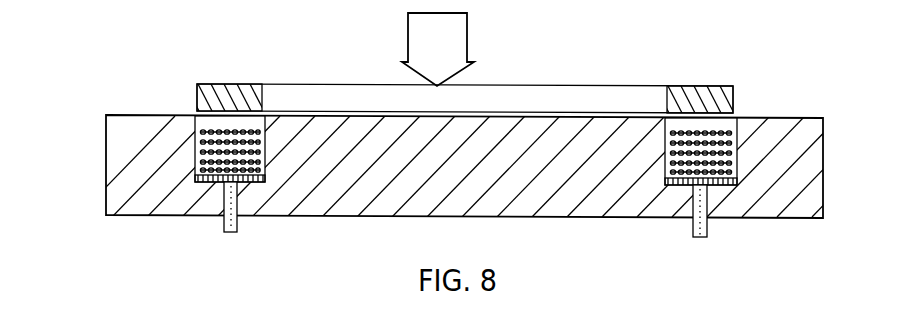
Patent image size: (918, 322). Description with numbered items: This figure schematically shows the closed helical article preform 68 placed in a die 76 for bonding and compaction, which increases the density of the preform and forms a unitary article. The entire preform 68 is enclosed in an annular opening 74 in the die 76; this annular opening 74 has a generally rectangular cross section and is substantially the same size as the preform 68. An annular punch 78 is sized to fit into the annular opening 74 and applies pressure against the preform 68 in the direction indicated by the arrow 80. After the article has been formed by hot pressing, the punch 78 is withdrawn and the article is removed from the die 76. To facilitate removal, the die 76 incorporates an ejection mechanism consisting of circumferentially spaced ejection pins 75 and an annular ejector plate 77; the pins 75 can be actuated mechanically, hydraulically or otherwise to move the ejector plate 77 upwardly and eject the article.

The article preform 68 is at (744, 113).
The annular opening 74 is at (199, 132).
The ejection pins 75 is at (208, 183).
The die 76 is at (92, 167).
The annular ejector plate 77 is at (231, 233).
The annular punch 78 is at (597, 102).
The arrow 80 is at (448, 60).